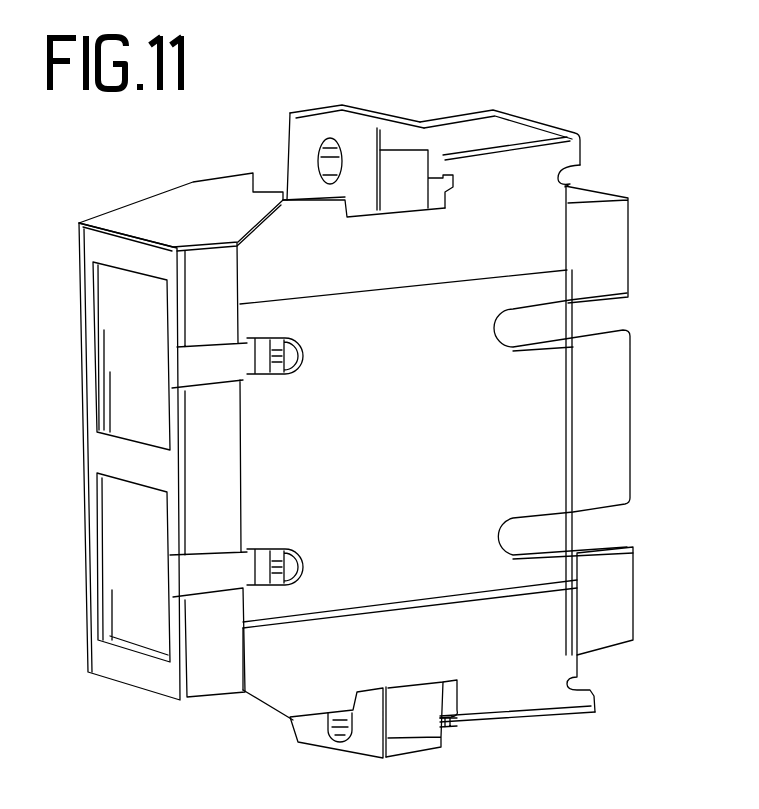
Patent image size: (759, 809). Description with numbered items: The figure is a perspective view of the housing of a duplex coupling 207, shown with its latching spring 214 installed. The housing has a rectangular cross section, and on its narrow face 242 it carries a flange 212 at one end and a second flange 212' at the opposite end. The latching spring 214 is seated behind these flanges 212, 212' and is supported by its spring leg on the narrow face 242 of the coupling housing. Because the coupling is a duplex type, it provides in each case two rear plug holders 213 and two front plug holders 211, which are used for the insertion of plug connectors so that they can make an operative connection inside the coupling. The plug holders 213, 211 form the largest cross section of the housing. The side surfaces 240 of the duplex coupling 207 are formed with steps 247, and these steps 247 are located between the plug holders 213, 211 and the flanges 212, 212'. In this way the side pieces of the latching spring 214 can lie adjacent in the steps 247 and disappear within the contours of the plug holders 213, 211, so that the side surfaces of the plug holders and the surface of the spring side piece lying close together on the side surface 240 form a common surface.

The duplex coupling 207 is at (206, 166).
The front plug holder 211 is at (615, 232).
The flange 212 is at (368, 147).
The flange 212' is at (366, 730).
The rear plug holder 213 is at (125, 381).
The latching spring 214 is at (520, 167).
The side surface 240 is at (343, 548).
The narrow face 242 is at (143, 231).
The step 247 is at (545, 432).